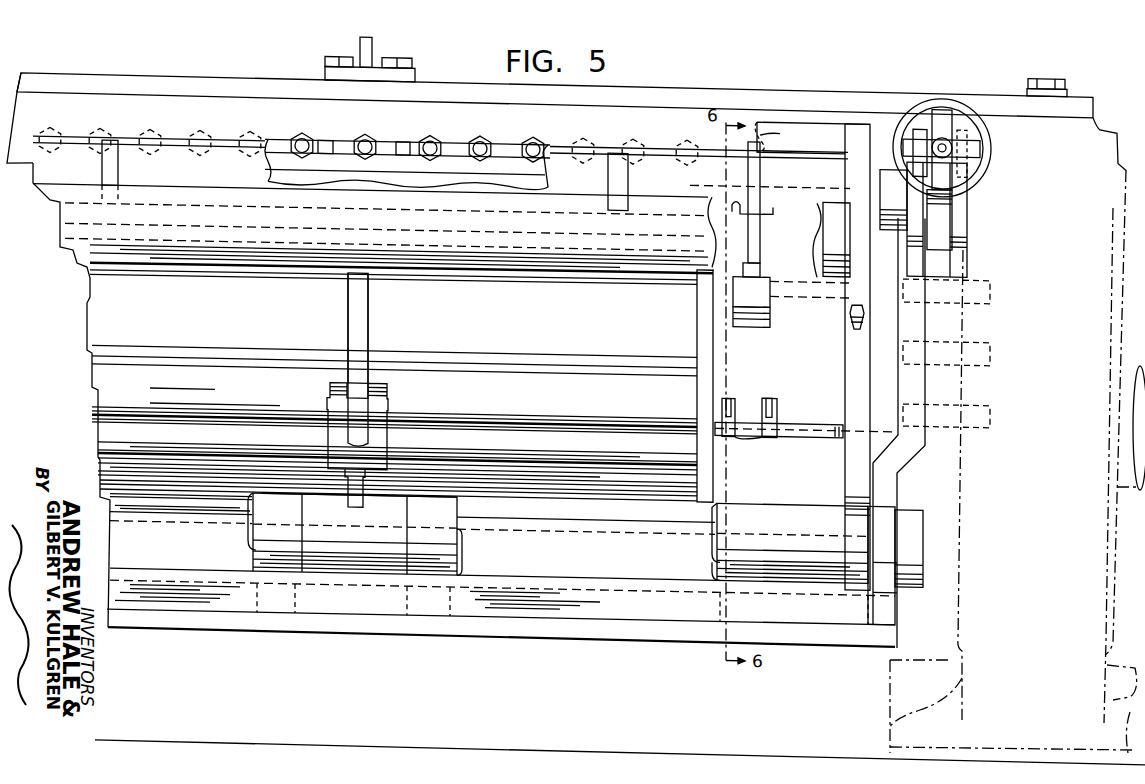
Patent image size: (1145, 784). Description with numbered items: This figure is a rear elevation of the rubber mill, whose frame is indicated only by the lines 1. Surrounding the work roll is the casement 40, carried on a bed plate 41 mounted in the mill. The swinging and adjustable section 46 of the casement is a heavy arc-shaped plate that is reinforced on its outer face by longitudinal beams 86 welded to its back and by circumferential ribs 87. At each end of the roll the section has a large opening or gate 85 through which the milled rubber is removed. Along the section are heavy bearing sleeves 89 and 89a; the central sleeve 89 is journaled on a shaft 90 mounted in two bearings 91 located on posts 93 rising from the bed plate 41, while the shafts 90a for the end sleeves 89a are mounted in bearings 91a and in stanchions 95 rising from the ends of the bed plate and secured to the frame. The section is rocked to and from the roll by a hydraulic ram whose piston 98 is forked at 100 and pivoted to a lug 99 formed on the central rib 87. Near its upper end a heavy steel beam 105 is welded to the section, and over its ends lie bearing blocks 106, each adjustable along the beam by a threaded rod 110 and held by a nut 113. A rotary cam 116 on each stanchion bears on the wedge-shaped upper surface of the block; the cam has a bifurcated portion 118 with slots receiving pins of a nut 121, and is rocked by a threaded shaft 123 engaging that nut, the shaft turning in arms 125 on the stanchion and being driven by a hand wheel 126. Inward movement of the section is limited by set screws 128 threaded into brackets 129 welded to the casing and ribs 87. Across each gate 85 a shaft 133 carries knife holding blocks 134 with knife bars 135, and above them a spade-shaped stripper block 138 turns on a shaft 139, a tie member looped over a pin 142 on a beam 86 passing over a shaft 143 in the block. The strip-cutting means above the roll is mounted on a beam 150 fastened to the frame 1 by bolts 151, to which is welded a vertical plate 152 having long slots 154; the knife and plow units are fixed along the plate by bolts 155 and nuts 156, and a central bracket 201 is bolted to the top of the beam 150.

The frame 1 is at (1108, 114).
The casement 40 is at (82, 276).
The bed plate 41 is at (260, 620).
The swinging casement section 46 is at (97, 320).
The gate opening 85 is at (843, 337).
The longitudinal beams 86 is at (228, 135).
The circumferential ribs 87 is at (120, 167).
The bearing sleeve 89 is at (375, 580).
The end bearing sleeves 89a is at (818, 575).
The shaft 90 is at (462, 545).
The end shafts 90a is at (713, 530).
The bearings 91 is at (250, 540).
The end bearings 91a is at (715, 556).
The posts 93 is at (255, 590).
The stanchions 95 is at (907, 371).
The piston 98 is at (350, 470).
The lug 99 is at (363, 373).
The fork 100 is at (378, 425).
The steel beam 105 is at (527, 268).
The bearing blocks 106 is at (890, 262).
The threaded rod 110 is at (852, 300).
The nut 113 is at (870, 292).
The rotary cam 116 is at (897, 208).
The bearing 118 is at (965, 122).
The nut 121 is at (932, 112).
The threaded shaft 123 is at (952, 129).
The arms 125 is at (950, 200).
The hand wheel 126 is at (985, 129).
The set screws 128 is at (775, 133).
The brackets 129 is at (800, 118).
The shaft 133 is at (803, 408).
The knife holding blocks 134 is at (733, 424).
The knife bars 135 is at (770, 384).
The stripper block 138 is at (733, 315).
The shaft 139 is at (730, 280).
The pin 142 is at (776, 195).
The shaft 143 is at (768, 166).
The beam 150 is at (195, 83).
The bolts 151 is at (1067, 63).
The vertical plate 152 is at (125, 64).
The slots 154 is at (456, 136).
The bolts 155 is at (370, 133).
The nuts 156 is at (305, 133).
The bracket 201 is at (373, 44).